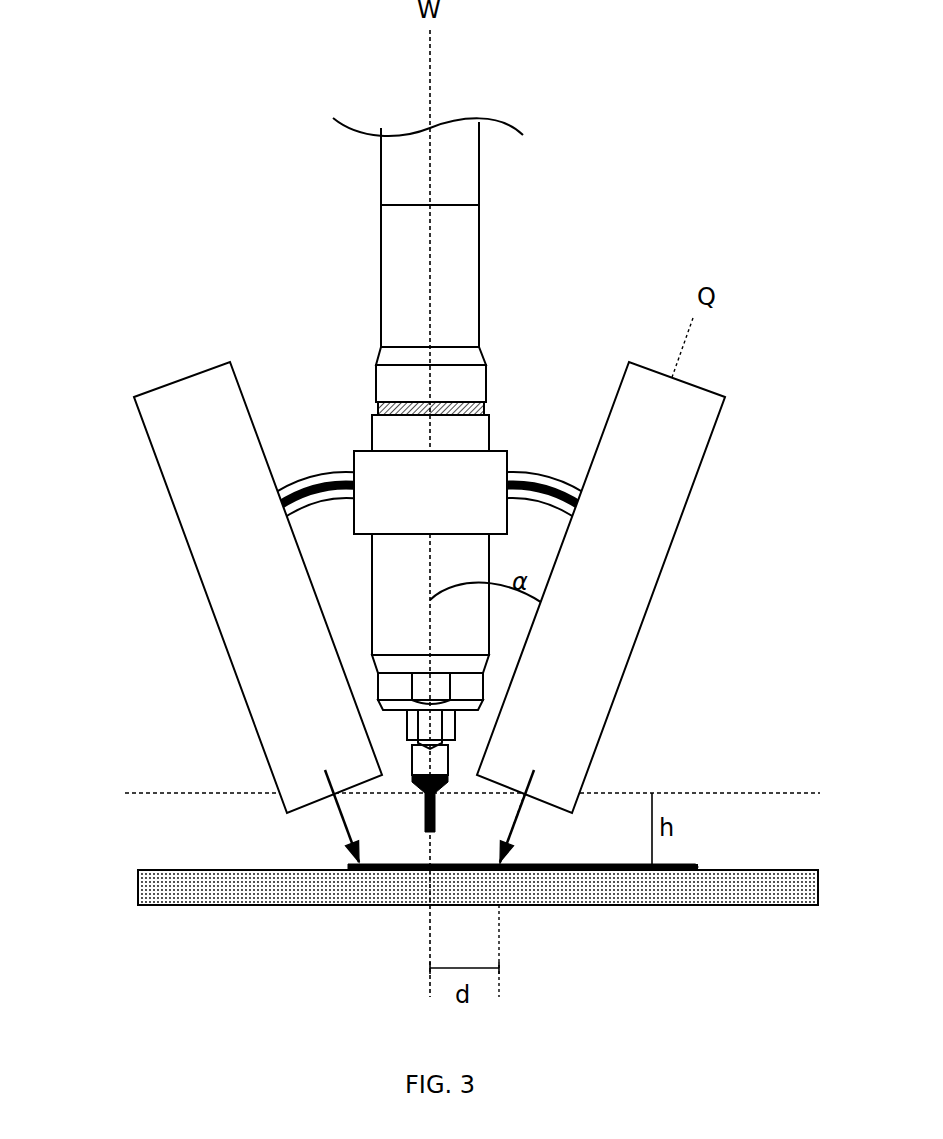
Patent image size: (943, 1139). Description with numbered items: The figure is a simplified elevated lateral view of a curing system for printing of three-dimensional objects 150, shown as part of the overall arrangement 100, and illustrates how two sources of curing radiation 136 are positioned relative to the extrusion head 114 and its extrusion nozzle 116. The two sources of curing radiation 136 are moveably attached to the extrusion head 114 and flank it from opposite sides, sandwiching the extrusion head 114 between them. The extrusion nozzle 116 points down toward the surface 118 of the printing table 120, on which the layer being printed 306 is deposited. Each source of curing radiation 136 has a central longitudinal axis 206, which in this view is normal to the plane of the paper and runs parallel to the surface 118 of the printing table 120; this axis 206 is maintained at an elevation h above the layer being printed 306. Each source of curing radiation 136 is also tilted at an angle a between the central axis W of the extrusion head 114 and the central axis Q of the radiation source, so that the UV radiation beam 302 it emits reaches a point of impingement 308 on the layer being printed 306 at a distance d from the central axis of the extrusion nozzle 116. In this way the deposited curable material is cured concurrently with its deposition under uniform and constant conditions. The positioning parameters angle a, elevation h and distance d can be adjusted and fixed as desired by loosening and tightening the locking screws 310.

The additive manufacturing system 100 is at (392, 434).
The extrusion head 114 is at (481, 305).
The extrusion nozzle 116 is at (425, 805).
The surface of printing table 118 is at (198, 868).
The printing table 120 is at (317, 907).
The source of curing radiation 136 is at (143, 427).
The curing system for printing of 3-D objects 150 is at (427, 570).
The central longitudinal axis 206 is at (324, 780).
The UV radiation beam 302 is at (345, 842).
The layer being printed 306 is at (678, 868).
The point of impingement 308 is at (499, 884).
The locking screw 310 is at (222, 538).